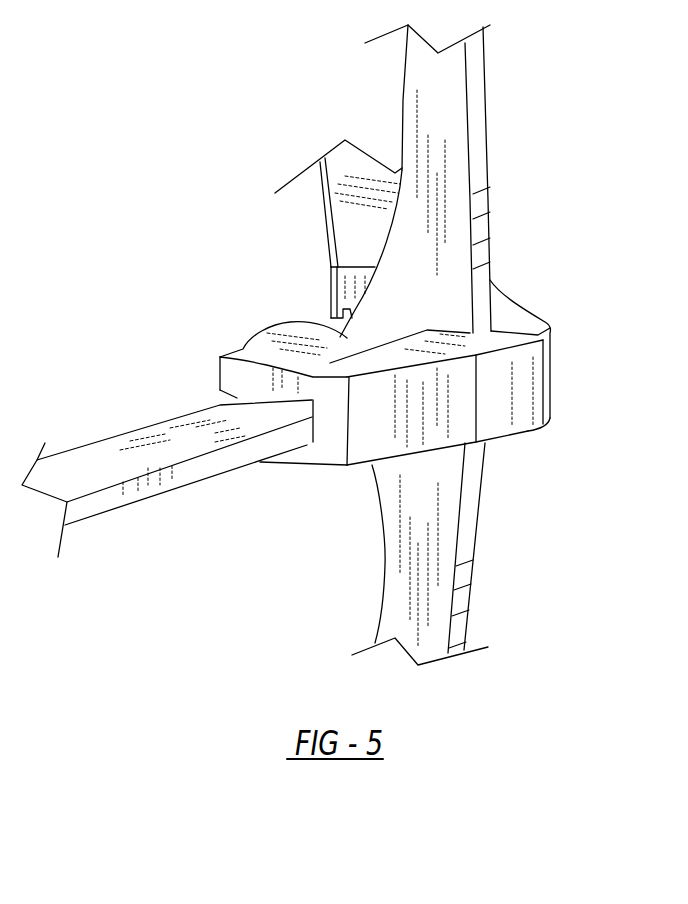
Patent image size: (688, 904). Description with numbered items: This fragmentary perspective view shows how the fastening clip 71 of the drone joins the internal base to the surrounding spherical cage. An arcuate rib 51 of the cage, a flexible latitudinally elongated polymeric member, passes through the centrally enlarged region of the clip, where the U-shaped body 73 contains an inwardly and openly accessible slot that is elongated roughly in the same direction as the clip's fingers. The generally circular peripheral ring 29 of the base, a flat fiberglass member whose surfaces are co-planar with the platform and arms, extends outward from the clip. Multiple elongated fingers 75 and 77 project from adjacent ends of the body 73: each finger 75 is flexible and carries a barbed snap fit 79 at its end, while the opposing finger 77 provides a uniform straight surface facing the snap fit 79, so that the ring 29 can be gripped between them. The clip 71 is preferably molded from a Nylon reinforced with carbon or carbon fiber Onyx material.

The peripheral ring 29 is at (93, 505).
The arcuate rib 51 is at (450, 108).
The fastening clip 71 is at (535, 387).
The body 73 is at (502, 302).
The finger 75 is at (280, 368).
The finger 77 is at (305, 453).
The barbed snap fit 79 is at (330, 317).